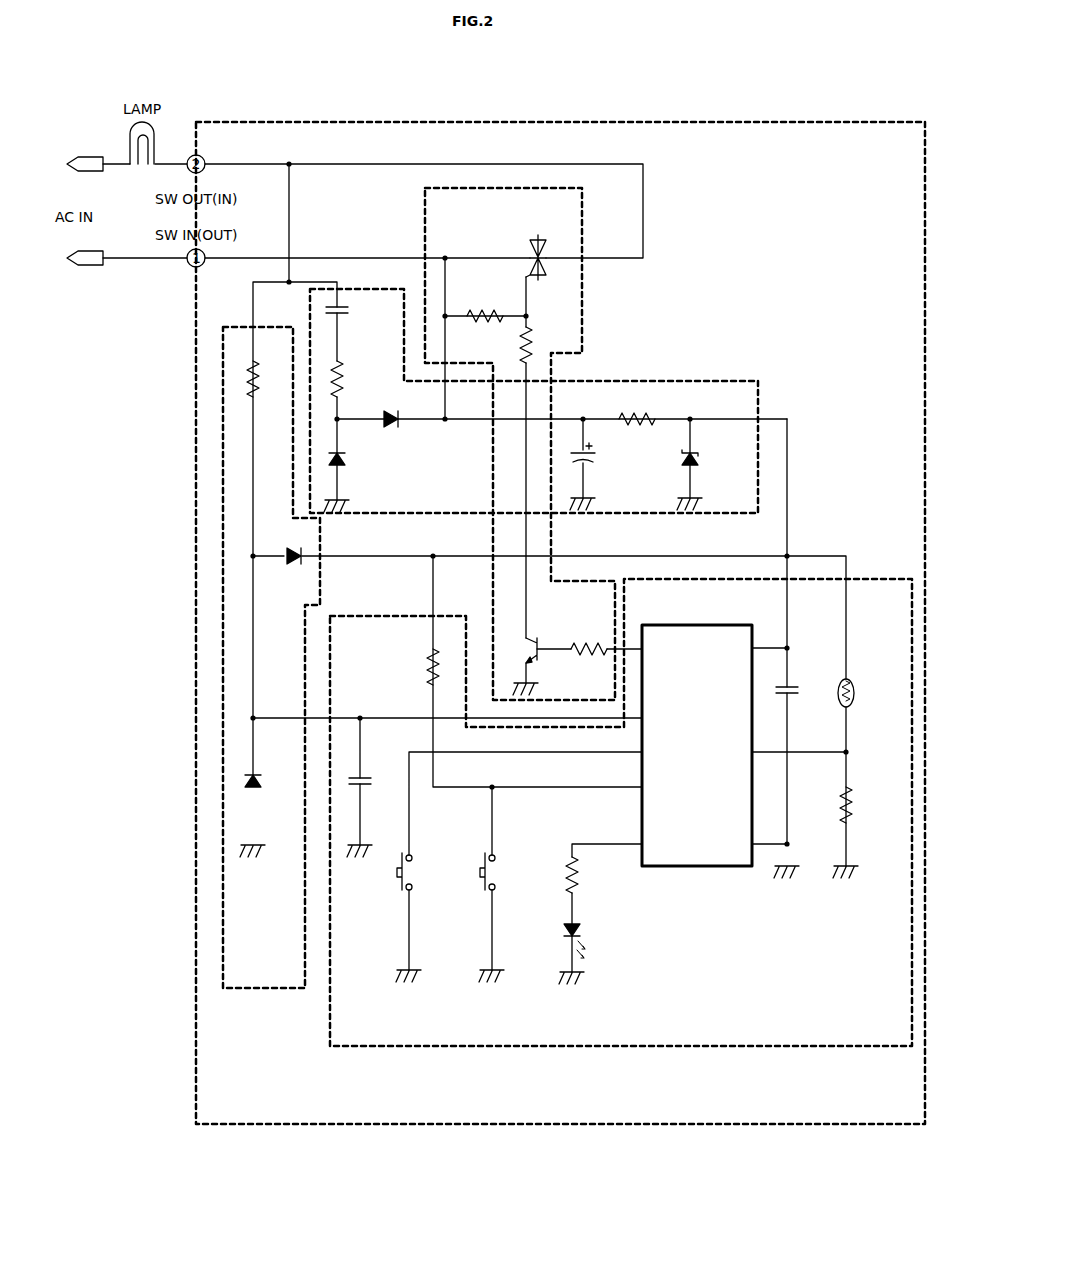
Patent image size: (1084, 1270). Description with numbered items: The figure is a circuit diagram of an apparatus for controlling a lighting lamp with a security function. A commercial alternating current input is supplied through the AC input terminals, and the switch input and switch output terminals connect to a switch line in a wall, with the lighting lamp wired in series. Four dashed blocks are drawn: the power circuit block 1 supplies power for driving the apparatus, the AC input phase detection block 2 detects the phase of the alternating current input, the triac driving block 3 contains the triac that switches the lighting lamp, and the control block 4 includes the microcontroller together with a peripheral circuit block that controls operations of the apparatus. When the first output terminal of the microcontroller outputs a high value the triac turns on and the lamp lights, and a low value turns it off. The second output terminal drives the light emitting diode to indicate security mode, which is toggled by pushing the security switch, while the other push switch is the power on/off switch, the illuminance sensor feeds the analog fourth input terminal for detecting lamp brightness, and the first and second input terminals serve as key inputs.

The power circuit block 1 is at (721, 406).
The AC input phase detection block 2 is at (250, 992).
The triac driving block 3 is at (465, 200).
The control block 4 is at (732, 1042).